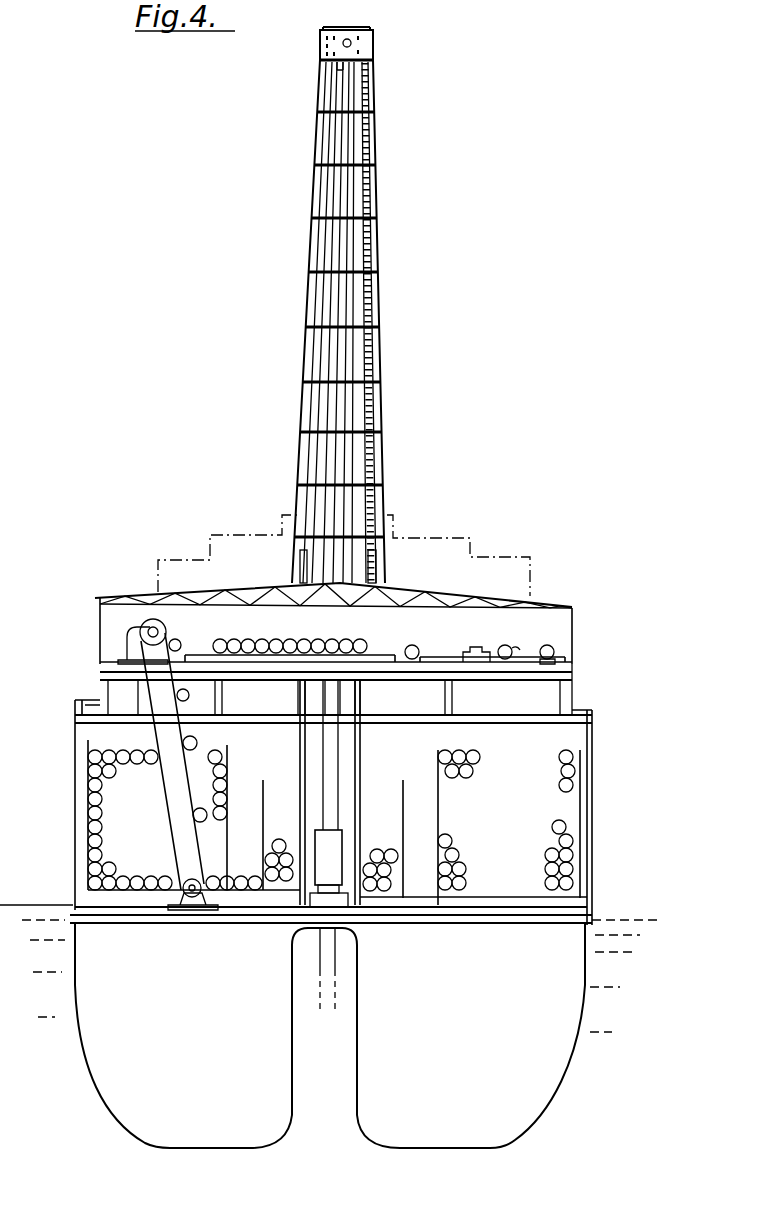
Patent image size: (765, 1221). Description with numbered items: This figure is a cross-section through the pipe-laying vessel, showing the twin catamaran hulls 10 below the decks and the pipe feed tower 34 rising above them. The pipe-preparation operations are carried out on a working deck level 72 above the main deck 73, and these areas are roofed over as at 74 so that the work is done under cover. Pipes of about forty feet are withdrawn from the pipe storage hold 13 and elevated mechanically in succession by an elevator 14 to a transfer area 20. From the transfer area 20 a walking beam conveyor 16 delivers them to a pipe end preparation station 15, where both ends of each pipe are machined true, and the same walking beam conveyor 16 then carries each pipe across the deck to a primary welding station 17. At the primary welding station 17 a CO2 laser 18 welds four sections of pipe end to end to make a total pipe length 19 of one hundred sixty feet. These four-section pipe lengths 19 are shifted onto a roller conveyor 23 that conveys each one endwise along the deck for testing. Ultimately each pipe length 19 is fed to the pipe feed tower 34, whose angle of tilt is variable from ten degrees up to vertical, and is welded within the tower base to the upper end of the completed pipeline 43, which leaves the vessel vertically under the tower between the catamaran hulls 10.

The catamaran hulls 10 is at (292, 1098).
The pipe storage hold 13 is at (90, 838).
The elevator 14 is at (171, 789).
The pipe end preparation station 15 is at (432, 642).
The walking beam conveyor 16 is at (384, 666).
The primary welding station 17 is at (510, 673).
The CO2 laser 18 is at (486, 643).
The pipe length 19 is at (537, 651).
The transfer area 20 is at (255, 650).
The roller conveyor 23 is at (556, 662).
The pipe feed tower 34 is at (381, 417).
The completed pipeline 43 is at (332, 790).
The working deck level 72 is at (108, 655).
The main deck 73 is at (88, 703).
The roof 74 is at (487, 591).